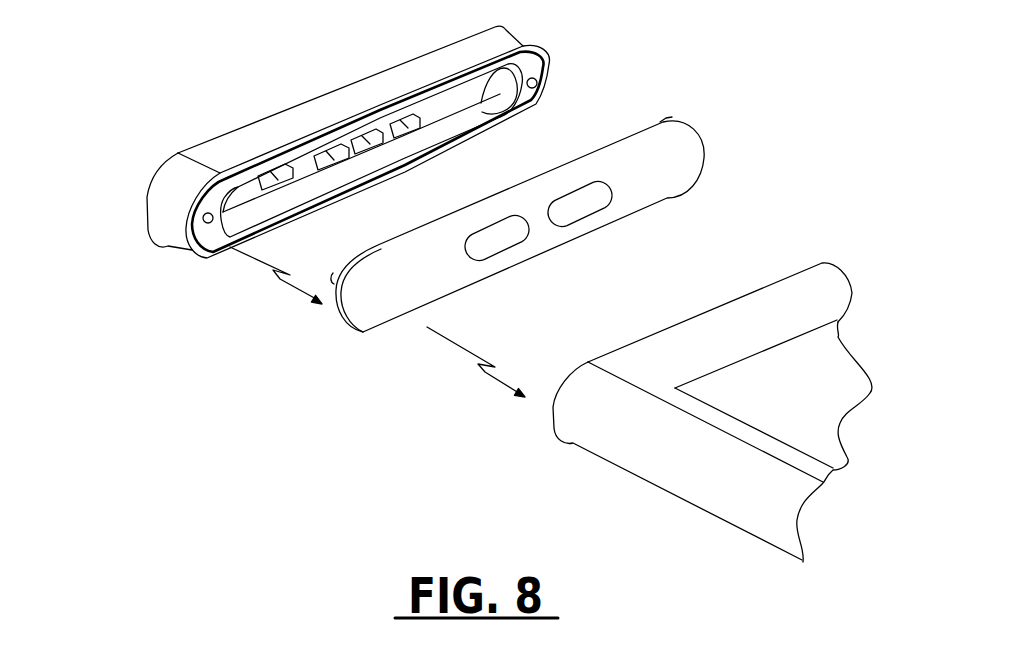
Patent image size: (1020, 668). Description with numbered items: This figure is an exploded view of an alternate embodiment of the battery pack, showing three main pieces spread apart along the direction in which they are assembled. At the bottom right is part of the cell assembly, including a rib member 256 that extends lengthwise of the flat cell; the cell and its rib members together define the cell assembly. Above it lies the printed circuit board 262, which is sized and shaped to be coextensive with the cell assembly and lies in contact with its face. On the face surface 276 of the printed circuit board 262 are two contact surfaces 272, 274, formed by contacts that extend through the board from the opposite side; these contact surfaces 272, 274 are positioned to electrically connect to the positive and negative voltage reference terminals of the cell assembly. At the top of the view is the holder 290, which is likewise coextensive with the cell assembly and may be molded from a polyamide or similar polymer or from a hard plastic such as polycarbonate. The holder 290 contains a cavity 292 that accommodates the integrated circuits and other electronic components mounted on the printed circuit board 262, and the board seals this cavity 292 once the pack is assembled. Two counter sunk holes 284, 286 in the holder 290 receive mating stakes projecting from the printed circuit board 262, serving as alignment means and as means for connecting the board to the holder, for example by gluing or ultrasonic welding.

The rib member 256 is at (648, 450).
The printed circuit board 262 is at (446, 259).
The contact surface 272 is at (482, 243).
The contact surface 274 is at (578, 203).
The face surface 276 is at (517, 224).
The counter sunk hole 284 is at (230, 257).
The counter sunk hole 286 is at (547, 95).
The holder 290 is at (370, 178).
The cavity 292 is at (436, 116).